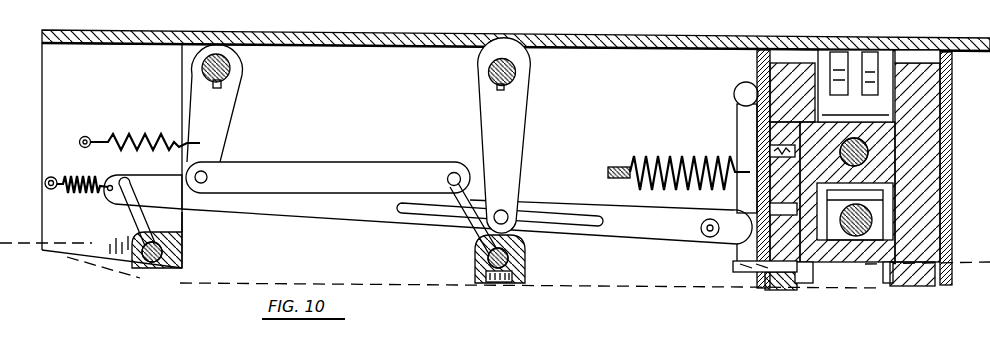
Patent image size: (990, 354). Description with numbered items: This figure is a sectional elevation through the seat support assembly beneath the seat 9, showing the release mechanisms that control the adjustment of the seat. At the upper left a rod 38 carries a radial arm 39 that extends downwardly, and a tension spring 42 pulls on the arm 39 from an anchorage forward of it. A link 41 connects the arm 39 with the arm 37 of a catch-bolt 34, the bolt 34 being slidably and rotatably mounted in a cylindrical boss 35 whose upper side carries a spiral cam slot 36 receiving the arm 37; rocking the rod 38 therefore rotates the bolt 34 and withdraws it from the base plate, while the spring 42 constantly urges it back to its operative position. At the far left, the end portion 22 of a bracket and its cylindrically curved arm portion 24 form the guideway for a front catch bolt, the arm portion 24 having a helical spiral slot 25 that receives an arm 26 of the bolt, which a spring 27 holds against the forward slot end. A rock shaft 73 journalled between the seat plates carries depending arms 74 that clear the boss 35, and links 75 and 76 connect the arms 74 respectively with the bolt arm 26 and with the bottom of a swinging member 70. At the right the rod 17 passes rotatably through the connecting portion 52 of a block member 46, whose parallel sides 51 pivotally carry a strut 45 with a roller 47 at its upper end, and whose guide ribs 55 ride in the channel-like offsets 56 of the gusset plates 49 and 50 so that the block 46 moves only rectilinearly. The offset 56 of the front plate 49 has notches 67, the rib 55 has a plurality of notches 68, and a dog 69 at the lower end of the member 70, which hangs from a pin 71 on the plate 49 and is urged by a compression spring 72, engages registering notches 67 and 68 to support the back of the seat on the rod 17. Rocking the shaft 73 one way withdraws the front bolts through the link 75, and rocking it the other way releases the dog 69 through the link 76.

The seat 9 is at (25, 236).
The rod 17 is at (868, 150).
The end portion of bracket 22 is at (117, 88).
The cylindrically curved arm portion 24 is at (184, 248).
The helical spiral slot 25 is at (184, 222).
The arm 26 is at (138, 221).
The spring 27 is at (79, 191).
The catch-bolt 34 is at (526, 268).
The cylindrical boss 35 is at (474, 269).
The spiral cam slot 36 is at (527, 232).
The arm 37 is at (478, 236).
The rod 38 is at (244, 68).
The radial arm 39 is at (220, 121).
The link 41 is at (350, 163).
The tension spring 42 is at (137, 134).
The strut 45 is at (828, 238).
The block member 46 is at (932, 62).
The roller 47 is at (843, 52).
The gusset plate 49 is at (788, 52).
The gusset plate 50 is at (922, 61).
The block side 51 is at (812, 276).
The connecting portion 52 is at (838, 128).
The guide rib 55 is at (915, 286).
The offset 56 is at (760, 61).
The notch 67 is at (742, 268).
The notch 68 is at (770, 151).
The dog 69 is at (735, 264).
The swinging member 70 is at (737, 120).
The pin 71 is at (745, 95).
The compression spring 72 is at (670, 157).
The rock shaft 73 is at (517, 72).
The arm 74 is at (490, 118).
The link 75 is at (327, 214).
The link 76 is at (640, 236).